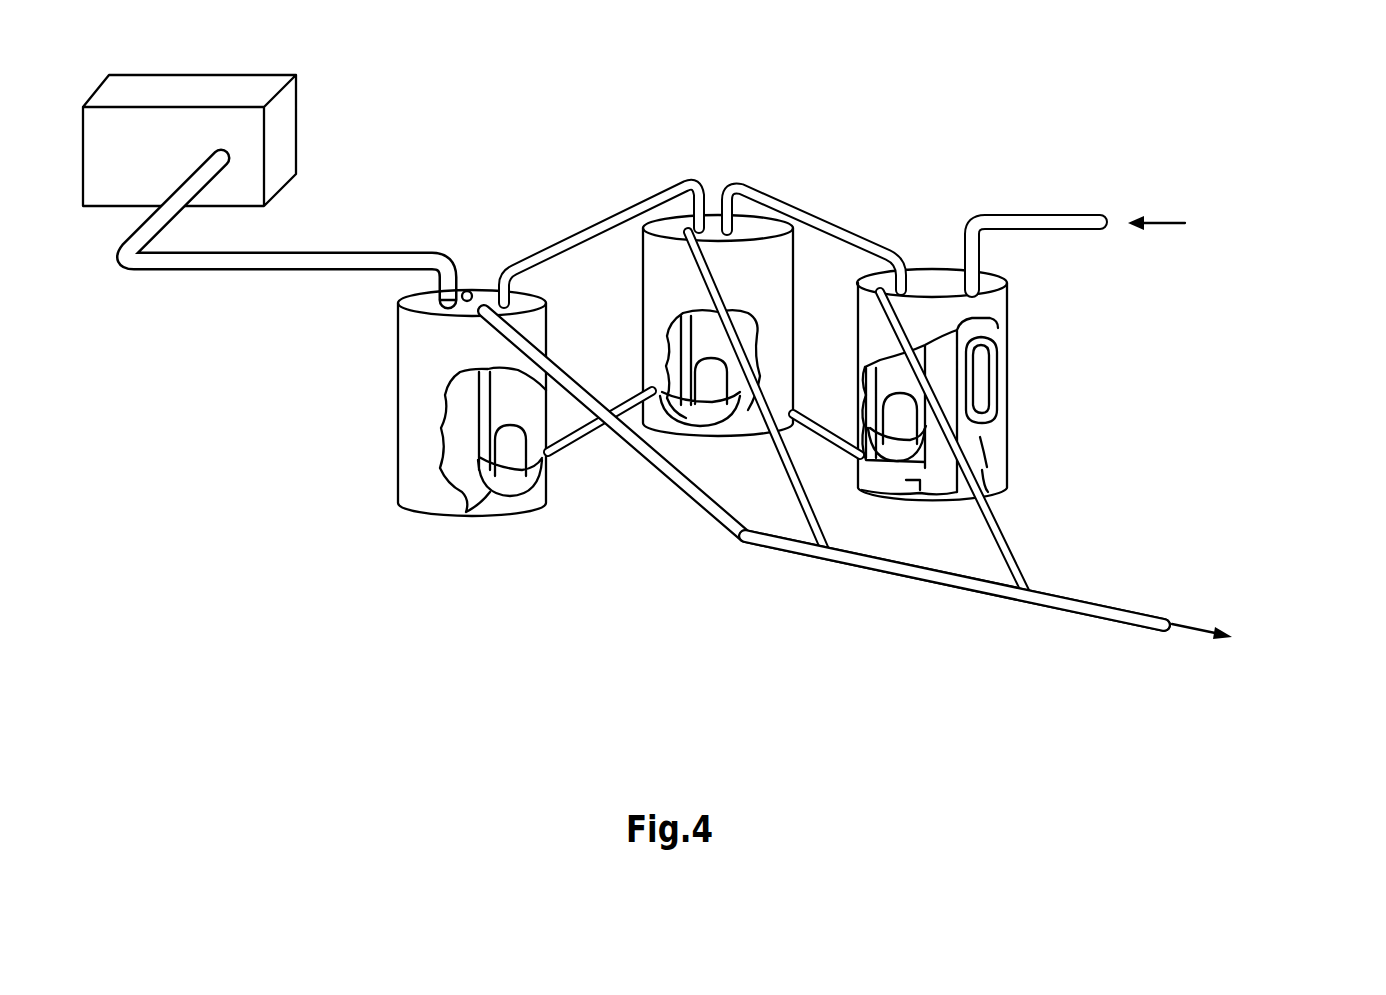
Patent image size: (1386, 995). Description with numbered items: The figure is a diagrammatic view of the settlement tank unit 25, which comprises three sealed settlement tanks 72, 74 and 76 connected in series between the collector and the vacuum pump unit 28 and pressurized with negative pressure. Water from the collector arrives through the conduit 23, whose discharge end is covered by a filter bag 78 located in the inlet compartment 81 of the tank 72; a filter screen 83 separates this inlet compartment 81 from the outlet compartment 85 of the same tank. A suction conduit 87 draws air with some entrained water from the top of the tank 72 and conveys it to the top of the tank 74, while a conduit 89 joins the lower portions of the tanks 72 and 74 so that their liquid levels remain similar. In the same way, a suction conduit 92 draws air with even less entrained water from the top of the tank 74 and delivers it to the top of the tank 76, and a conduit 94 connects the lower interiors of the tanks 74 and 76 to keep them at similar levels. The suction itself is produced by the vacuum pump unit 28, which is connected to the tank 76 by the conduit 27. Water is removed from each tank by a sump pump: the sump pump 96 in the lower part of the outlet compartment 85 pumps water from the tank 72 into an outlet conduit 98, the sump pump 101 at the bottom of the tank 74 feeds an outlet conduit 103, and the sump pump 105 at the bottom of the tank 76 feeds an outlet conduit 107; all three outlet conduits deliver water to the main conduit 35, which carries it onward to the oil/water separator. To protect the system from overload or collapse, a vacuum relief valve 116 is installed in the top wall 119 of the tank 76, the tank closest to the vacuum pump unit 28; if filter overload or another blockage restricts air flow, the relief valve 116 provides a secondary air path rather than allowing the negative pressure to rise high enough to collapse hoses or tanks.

The vacuum pump unit 28 is at (285, 138).
The conduit 27 is at (250, 290).
The vacuum relief valve 116 is at (468, 288).
The top wall 119 is at (445, 293).
The suction conduit 92 is at (585, 222).
The suction conduit 87 is at (835, 205).
The conduit 23 is at (1012, 220).
The outlet conduit 103 is at (718, 262).
The settlement tank 74 is at (681, 353).
The conduit 89 is at (812, 400).
The filter bag 78 is at (1000, 364).
The settlement tank 72 is at (963, 416).
The settlement tank 76 is at (469, 427).
The conduit 94 is at (572, 452).
The sump pump 101 is at (710, 440).
The sump pump 96 is at (878, 474).
The outlet compartment 85 is at (910, 482).
The filter screen 83 is at (924, 492).
The inlet compartment 81 is at (1000, 446).
The outlet conduit 98 is at (1025, 572).
The sump pump 105 is at (525, 492).
The outlet conduit 107 is at (718, 532).
The settlement tank unit 25 is at (842, 404).
The main conduit 35 is at (905, 582).